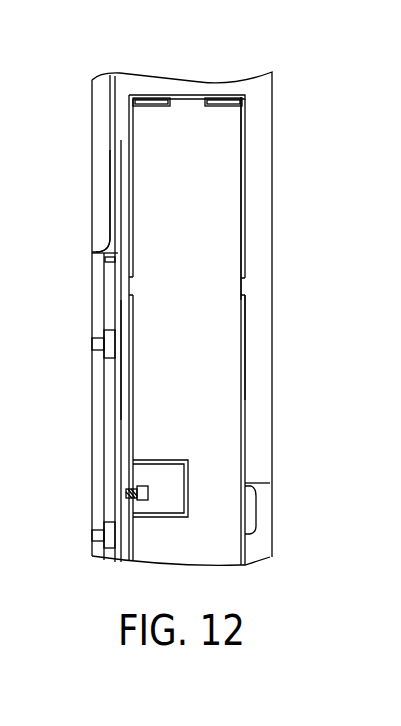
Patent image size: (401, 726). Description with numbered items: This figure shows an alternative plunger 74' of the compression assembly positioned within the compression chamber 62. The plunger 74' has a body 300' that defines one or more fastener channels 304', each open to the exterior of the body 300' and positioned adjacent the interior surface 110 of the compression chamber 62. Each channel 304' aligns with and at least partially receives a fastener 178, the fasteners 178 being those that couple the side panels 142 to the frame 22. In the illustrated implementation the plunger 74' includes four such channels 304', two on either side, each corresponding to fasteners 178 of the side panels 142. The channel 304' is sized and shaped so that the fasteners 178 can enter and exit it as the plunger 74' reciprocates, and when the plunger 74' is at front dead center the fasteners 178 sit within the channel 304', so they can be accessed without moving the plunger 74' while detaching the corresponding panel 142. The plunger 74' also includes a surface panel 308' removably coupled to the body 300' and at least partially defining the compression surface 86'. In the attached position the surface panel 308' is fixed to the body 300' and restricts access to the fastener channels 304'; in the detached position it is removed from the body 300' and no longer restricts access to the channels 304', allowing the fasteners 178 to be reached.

The frame 22 is at (95, 428).
The compression chamber 62 is at (258, 112).
The plunger 74' is at (280, 198).
The compression surface 86' is at (108, 213).
The interior surface 110 is at (125, 368).
The side panel 142 is at (123, 345).
The fastener 178 is at (127, 490).
The body 300' is at (287, 310).
The fastener channel 304' is at (164, 456).
The surface panel 308' is at (235, 330).